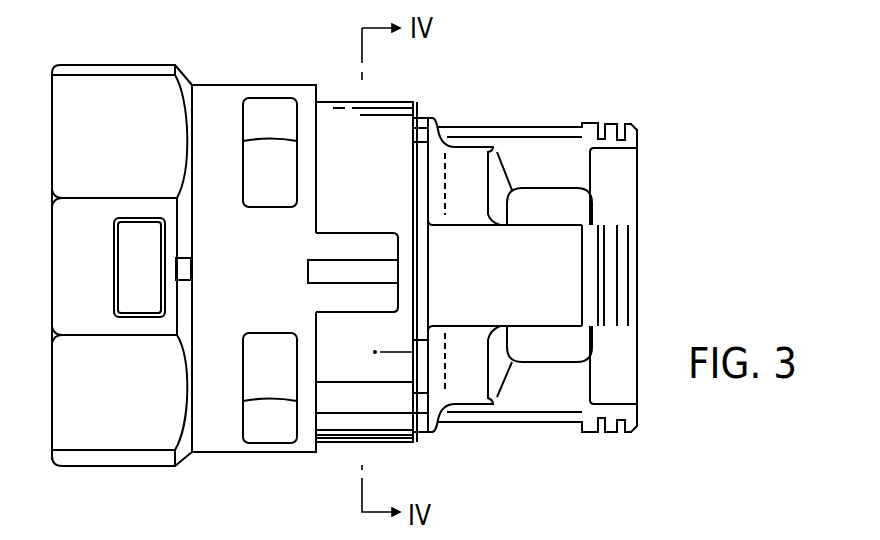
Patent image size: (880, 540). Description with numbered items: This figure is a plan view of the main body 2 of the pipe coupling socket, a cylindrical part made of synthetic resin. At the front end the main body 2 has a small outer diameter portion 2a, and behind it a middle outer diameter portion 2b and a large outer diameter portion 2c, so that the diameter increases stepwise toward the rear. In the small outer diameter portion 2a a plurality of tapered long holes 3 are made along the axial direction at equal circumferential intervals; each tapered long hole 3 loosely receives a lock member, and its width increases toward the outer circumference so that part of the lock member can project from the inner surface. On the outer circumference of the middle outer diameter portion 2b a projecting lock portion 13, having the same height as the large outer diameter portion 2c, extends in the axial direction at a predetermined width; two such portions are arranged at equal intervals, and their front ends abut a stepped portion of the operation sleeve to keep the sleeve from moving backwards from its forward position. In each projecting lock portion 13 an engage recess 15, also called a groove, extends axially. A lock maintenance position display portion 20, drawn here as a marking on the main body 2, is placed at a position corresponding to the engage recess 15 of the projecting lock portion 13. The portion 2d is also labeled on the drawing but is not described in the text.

The main body 2 is at (222, 84).
The small outer diameter portion 2a is at (527, 147).
The middle outer diameter portion 2b is at (385, 117).
The large outer diameter portion 2c is at (287, 93).
The lock knob 2d is at (118, 87).
The tapered long hole 3 is at (550, 213).
The projecting lock portion 13 is at (350, 302).
The engage recess 15 is at (368, 268).
The lock maintenance position display portion 20 is at (185, 268).